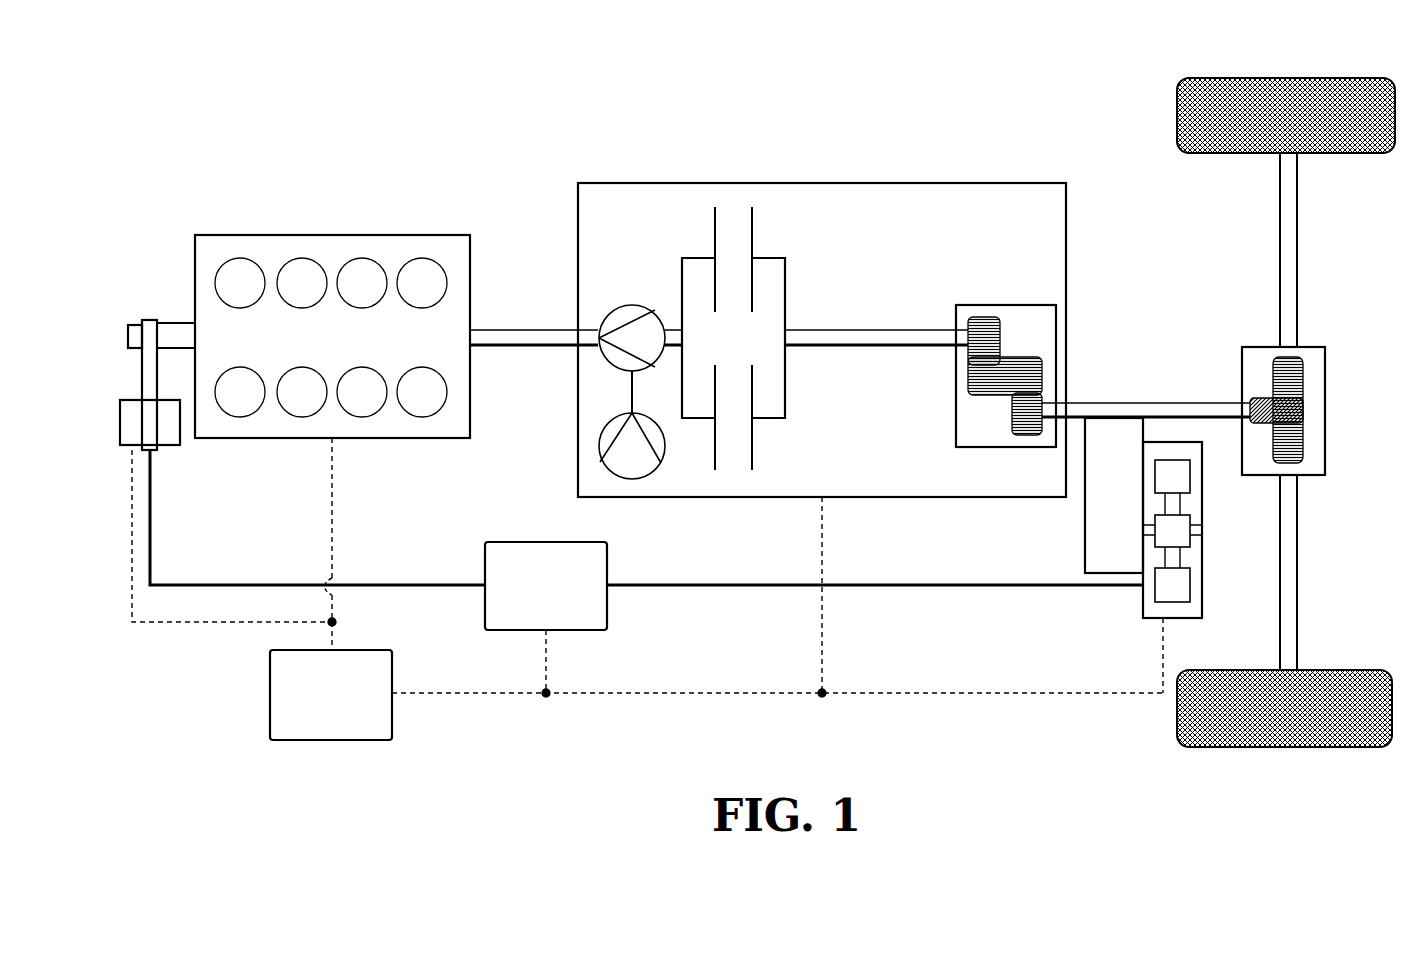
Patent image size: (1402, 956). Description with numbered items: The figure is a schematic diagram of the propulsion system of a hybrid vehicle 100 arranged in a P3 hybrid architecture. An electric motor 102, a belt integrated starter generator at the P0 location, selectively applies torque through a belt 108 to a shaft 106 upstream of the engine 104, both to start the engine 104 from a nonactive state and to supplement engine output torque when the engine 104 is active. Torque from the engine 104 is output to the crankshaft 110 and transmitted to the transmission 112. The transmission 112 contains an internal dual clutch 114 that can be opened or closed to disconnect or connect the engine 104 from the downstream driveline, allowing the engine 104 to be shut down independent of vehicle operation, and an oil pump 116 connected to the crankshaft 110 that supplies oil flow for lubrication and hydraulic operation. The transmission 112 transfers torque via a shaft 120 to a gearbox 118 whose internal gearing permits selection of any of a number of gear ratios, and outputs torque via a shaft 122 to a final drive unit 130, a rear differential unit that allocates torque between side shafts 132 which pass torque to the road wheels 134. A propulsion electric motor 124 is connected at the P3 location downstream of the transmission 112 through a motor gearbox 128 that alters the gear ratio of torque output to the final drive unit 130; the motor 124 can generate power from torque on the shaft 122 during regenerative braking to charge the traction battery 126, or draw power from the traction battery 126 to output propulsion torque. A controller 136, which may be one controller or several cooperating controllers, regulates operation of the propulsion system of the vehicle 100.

The hybrid vehicle 100 is at (486, 154).
The electric motor 102 is at (165, 452).
The engine 104 is at (353, 349).
The shaft 106 is at (175, 320).
The belt 108 is at (142, 388).
The crankshaft 110 is at (560, 328).
The transmission 112 is at (843, 182).
The dual clutch 114 is at (790, 300).
The oil pump 116 is at (632, 305).
The gearbox 118 is at (1030, 304).
The shaft 120 is at (915, 326).
The shaft 122 is at (1233, 402).
The propulsion electric motor 124 is at (1180, 620).
The traction battery 126 is at (565, 597).
The motor gearbox 128 is at (1083, 558).
The final drive unit 130 is at (1308, 346).
The side shafts 132 is at (1298, 272).
The road wheels 134 is at (1265, 82).
The controller 136 is at (350, 710).